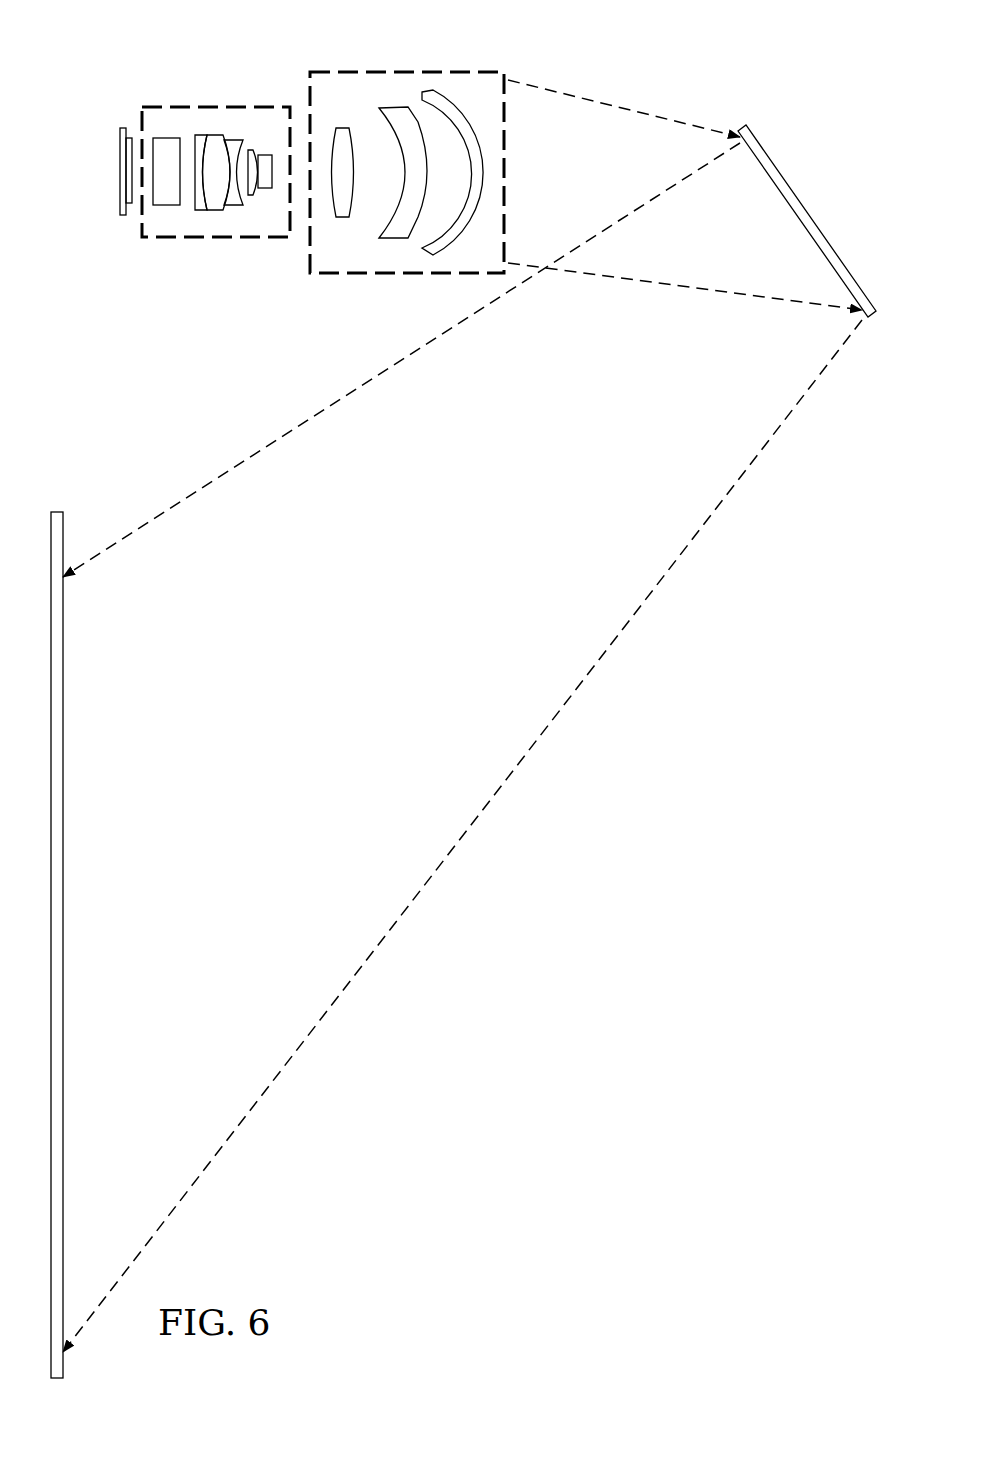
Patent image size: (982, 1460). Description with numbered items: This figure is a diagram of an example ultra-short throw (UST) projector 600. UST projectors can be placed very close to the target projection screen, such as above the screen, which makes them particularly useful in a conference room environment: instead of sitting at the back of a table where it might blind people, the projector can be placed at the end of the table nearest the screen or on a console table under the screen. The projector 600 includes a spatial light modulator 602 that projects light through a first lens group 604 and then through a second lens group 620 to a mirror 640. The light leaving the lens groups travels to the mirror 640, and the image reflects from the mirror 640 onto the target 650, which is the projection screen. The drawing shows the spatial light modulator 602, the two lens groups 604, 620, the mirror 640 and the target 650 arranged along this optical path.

The ultra-short throw projector 600 is at (756, 60).
The spatial light modulator 602 is at (118, 173).
The lens group 604 is at (201, 104).
The lens group 620 is at (365, 65).
The mirror 640 is at (815, 215).
The target 650 is at (63, 943).